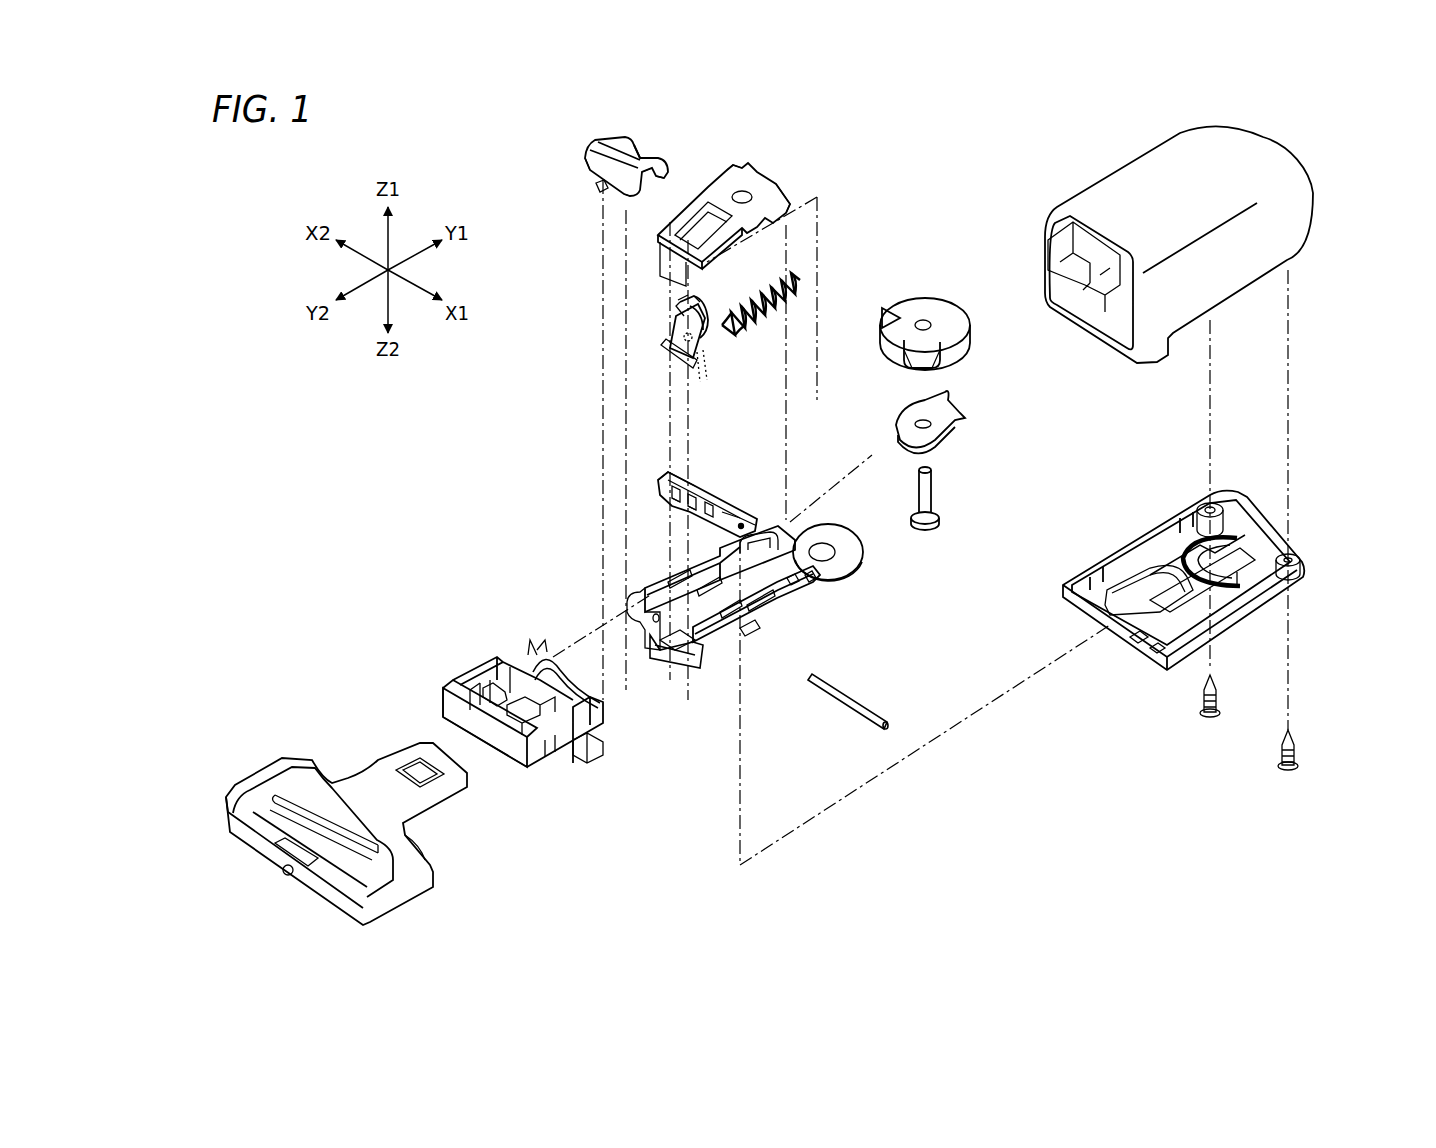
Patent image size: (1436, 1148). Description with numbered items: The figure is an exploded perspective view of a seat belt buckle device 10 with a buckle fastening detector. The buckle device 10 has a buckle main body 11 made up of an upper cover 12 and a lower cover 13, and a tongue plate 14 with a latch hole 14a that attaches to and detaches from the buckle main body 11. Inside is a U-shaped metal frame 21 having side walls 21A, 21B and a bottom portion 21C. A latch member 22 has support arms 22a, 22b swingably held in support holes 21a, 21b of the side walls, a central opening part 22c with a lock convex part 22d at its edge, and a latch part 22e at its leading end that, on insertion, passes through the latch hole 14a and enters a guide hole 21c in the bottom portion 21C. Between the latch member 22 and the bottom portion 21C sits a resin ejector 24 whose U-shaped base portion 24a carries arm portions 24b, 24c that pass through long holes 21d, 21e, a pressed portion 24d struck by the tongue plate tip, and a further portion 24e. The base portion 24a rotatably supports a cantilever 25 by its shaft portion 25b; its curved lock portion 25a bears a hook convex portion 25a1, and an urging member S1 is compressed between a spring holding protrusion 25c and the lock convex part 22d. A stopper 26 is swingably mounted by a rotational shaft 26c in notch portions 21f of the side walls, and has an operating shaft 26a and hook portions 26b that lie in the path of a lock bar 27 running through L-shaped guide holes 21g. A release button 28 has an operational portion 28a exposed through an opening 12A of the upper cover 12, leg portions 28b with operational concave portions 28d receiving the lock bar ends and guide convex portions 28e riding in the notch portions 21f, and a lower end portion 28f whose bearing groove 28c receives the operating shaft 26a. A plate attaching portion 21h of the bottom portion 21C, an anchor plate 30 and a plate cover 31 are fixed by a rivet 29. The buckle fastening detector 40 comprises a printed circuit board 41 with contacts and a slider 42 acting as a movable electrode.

The buckle device 10 is at (516, 170).
The buckle main body 11 is at (1340, 340).
The upper cover 12 is at (1222, 273).
The opening 12A is at (1113, 292).
The lower cover 13 is at (1232, 490).
The tongue plate 14 is at (357, 793).
The latch hole 14a is at (410, 770).
The frame 21 is at (849, 528).
The side wall 21A is at (777, 543).
The side wall 21B is at (783, 603).
The bottom portion 21C is at (660, 690).
The support hole 21a is at (797, 582).
The support hole 21b is at (783, 550).
The guide hole 21c is at (670, 650).
The long hole 21d is at (747, 640).
The long hole 21e is at (708, 566).
The notch portion 21f is at (690, 670).
The guide hole 21g is at (720, 677).
The plate attaching portion 21h is at (857, 553).
The latch member 22 is at (772, 177).
The support arm 22a is at (773, 203).
The support arm 22b is at (733, 168).
The opening part 22c is at (700, 225).
The lock convex part 22d is at (727, 207).
The latch part 22e is at (663, 260).
The ejector 24 is at (660, 455).
The base portion 24a is at (670, 500).
The arm portion 24b is at (737, 510).
The arm portion 24c is at (660, 478).
The pressed portion 24d is at (673, 515).
The ejector pin 24e is at (741, 517).
The cantilever 25 is at (675, 328).
The lock portion 25a is at (683, 310).
The hook convex portion 25a1 is at (690, 313).
The shaft portion 25b is at (660, 350).
The spring holding protrusion 25c is at (697, 360).
The stopper 26 is at (612, 145).
The operating shaft 26a is at (600, 188).
The hook portion 26b is at (675, 175).
The rotational shaft 26c is at (630, 198).
The lock bar 27 is at (857, 700).
The release button 28 is at (497, 660).
The operational portion 28a is at (508, 743).
The leg portion 28b is at (553, 753).
The bearing groove 28c is at (570, 747).
The operational concave portion 28d is at (515, 672).
The guide convex portion 28e is at (493, 702).
The lower end portion 28f is at (487, 690).
The rivet 29 is at (927, 495).
The anchor plate 30 is at (948, 417).
The plate cover 31 is at (943, 307).
The buckle fastening detector 40 is at (1230, 628).
The printed circuit board 41 is at (1245, 618).
The slider 42 is at (1153, 657).
The urging member S1 is at (798, 283).